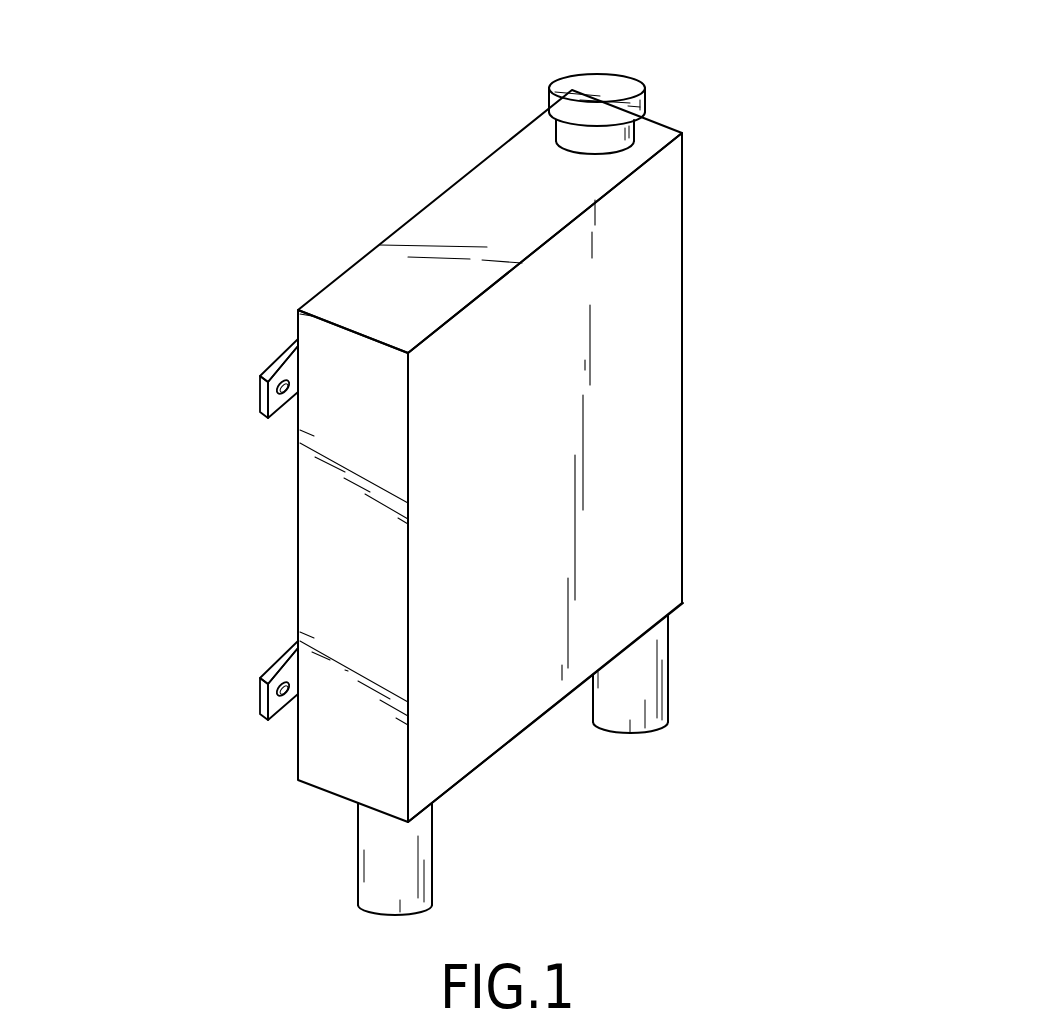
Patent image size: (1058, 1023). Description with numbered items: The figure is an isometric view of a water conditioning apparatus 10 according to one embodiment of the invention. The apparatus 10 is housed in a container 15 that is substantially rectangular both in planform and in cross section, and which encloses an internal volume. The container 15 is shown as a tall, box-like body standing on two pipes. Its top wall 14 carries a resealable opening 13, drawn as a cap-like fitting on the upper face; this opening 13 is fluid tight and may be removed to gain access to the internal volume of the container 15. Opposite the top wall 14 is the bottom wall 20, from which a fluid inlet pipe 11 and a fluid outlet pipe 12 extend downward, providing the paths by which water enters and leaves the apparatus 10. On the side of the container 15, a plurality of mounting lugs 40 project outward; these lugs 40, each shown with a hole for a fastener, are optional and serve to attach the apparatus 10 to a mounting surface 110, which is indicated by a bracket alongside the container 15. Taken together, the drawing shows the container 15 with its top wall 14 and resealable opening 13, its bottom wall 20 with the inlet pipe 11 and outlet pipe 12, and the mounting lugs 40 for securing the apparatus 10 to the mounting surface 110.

The water conditioning apparatus 10 is at (472, 461).
The fluid inlet pipe 11 is at (430, 883).
The fluid outlet pipe 12 is at (670, 695).
The resealable opening 13 is at (640, 82).
The top wall 14 is at (468, 207).
The container 15 is at (643, 293).
The bottom wall 20 is at (517, 700).
The mounting lugs 40 is at (257, 398).
The mounting surface 110 is at (403, 461).